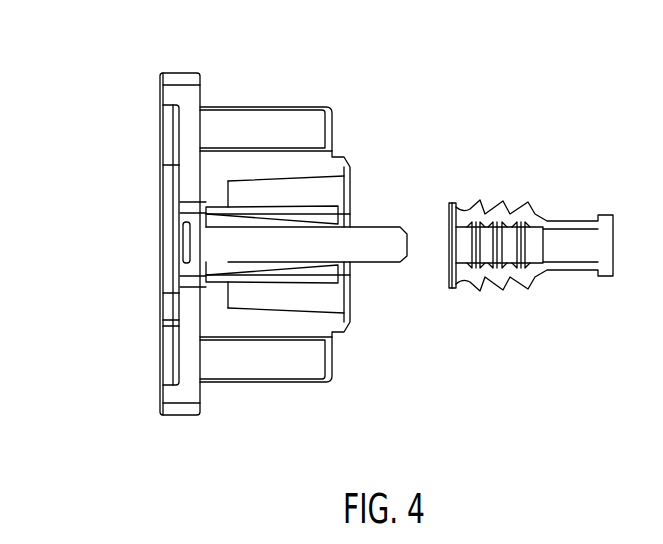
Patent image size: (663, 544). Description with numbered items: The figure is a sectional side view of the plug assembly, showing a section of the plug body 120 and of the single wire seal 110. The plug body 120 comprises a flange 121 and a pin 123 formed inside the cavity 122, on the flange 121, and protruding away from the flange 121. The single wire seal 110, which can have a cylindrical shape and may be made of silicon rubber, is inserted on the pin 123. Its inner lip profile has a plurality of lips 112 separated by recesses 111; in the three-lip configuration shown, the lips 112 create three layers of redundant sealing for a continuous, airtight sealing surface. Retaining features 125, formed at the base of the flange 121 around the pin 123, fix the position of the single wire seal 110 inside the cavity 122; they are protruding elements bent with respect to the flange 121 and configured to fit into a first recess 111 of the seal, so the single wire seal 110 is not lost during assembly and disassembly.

The single wire seal 110 is at (521, 299).
The recesses 111 is at (478, 287).
The lips 112 is at (489, 200).
The plug body 120 is at (353, 92).
The flange 121 is at (180, 424).
The cavity 122 is at (291, 289).
The pin 123 is at (383, 266).
The retaining features 125 is at (222, 189).